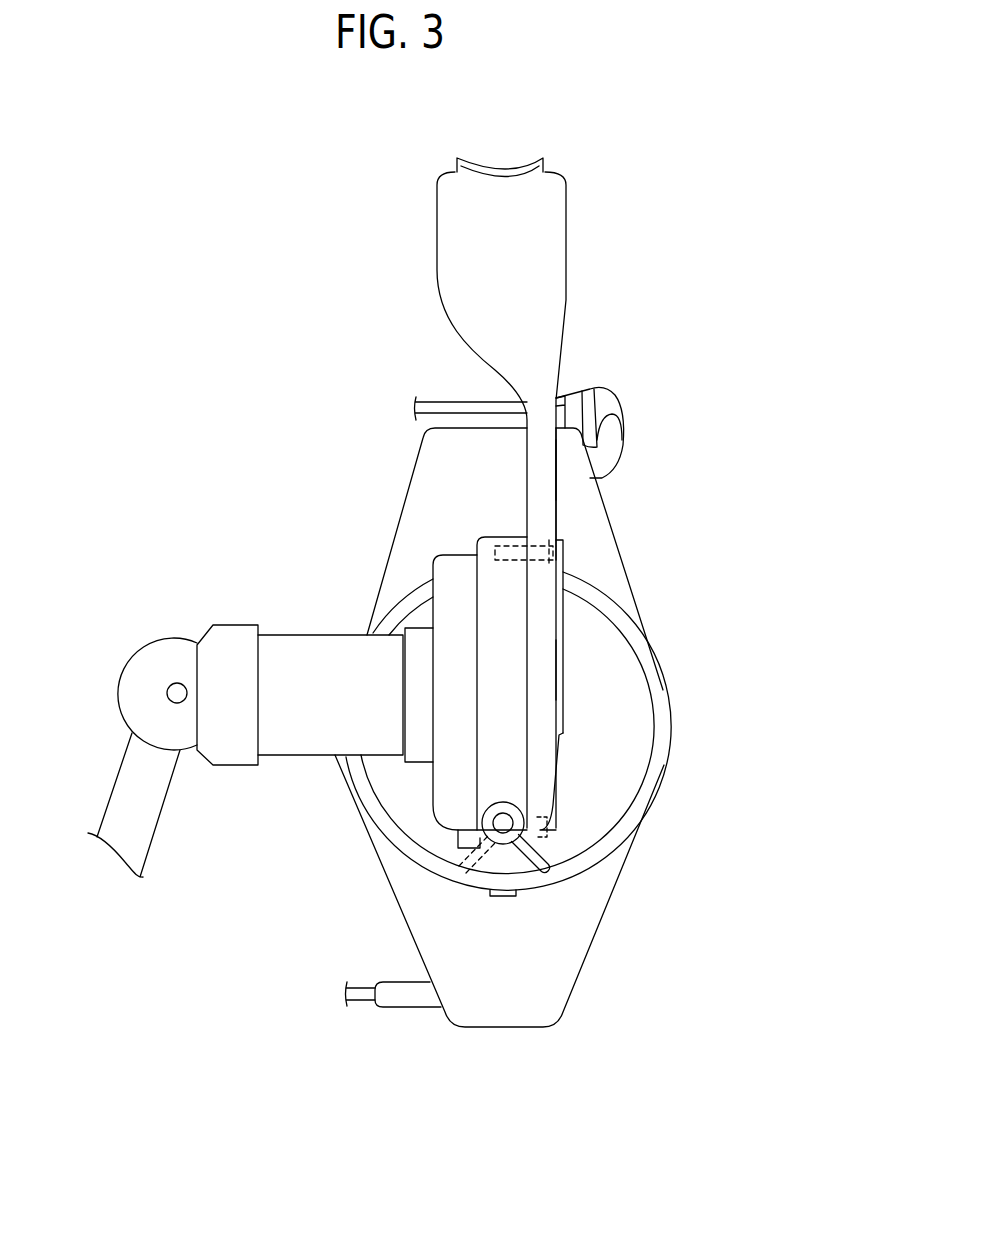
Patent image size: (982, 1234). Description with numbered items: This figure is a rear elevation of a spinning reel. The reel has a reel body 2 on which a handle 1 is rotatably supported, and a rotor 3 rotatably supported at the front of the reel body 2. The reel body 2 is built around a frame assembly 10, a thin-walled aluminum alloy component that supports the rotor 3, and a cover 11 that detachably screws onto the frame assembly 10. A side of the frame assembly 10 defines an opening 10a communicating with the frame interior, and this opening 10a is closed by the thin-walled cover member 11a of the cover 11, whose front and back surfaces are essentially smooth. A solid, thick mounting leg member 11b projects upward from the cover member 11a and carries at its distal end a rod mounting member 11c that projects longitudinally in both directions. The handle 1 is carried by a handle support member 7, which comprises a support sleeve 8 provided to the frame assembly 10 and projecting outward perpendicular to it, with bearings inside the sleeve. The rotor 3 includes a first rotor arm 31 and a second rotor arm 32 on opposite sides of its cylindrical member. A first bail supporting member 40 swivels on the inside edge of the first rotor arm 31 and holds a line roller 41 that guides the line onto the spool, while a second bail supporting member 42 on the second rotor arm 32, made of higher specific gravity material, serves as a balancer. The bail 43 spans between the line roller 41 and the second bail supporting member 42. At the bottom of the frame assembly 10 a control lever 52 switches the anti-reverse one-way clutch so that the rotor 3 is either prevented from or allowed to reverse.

The handle 1 is at (162, 807).
The reel body 2 is at (580, 530).
The rotor 3 is at (633, 757).
The handle support member 7 is at (292, 635).
The support sleeve 8 is at (318, 757).
The frame assembly 10 is at (435, 572).
The opening 10a is at (527, 698).
The cover 11 is at (562, 598).
The cover member 11a is at (552, 653).
The mounting leg member 11b is at (558, 487).
The rod mounting member 11c is at (517, 163).
The first rotor arm 31 is at (413, 470).
The second rotor arm 32 is at (545, 997).
The first bail supporting member 40 is at (617, 443).
The line roller 41 is at (607, 378).
The second bail supporting member 42 is at (405, 995).
The bail 43 is at (355, 1002).
The control lever 52 is at (537, 853).